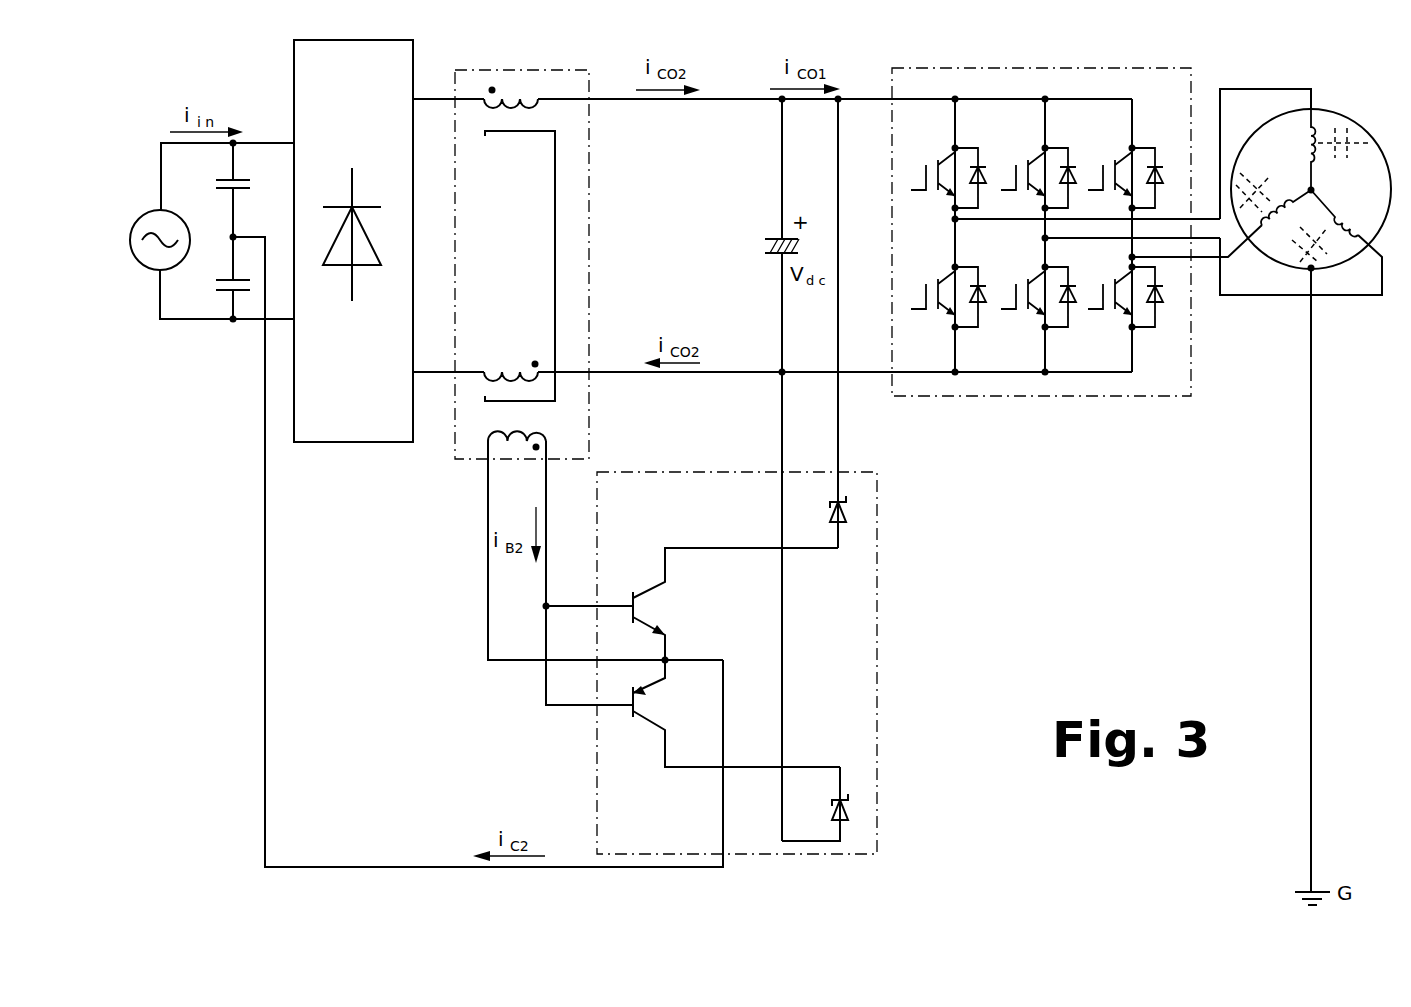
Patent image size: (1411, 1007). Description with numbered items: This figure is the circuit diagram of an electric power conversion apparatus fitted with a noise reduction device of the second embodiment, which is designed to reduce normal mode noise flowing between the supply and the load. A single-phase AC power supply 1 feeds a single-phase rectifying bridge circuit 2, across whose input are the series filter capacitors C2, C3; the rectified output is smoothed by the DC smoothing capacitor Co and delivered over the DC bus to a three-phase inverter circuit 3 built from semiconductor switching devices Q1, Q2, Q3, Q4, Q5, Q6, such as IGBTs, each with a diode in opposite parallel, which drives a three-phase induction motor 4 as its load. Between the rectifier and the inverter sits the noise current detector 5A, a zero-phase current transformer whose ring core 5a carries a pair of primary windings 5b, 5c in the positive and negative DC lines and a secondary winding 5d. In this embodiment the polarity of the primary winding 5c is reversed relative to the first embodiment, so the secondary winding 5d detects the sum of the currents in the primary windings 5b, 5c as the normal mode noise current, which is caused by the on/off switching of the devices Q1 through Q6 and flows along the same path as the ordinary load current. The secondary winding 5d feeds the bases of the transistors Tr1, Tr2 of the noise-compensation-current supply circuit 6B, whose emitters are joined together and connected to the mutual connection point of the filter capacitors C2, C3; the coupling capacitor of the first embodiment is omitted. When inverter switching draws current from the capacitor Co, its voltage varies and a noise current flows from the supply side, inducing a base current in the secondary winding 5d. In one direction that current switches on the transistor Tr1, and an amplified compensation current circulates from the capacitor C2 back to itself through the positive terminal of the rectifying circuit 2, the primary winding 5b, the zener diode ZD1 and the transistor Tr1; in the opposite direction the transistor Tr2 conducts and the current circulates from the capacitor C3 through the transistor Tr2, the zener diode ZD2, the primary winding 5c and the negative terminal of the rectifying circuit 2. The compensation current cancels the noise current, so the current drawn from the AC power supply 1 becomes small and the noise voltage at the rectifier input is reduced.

The single-phase AC power supply 1 is at (148, 266).
The single-phase rectifying bridge circuit 2 is at (416, 57).
The three-phase inverter circuit 3 is at (1193, 72).
The three-phase induction motor 4 is at (1343, 120).
The noise current detector 5A is at (500, 70).
The ring core 5a is at (555, 205).
The primary winding 5b is at (538, 107).
The primary winding 5c is at (535, 360).
The secondary winding 5d is at (546, 432).
The noise-compensation-current supply circuit 6B is at (878, 642).
The filter capacitor C2 is at (218, 190).
The filter capacitor C3 is at (218, 278).
The DC smoothing capacitor Co is at (760, 470).
The semiconductor switching device Q1 is at (947, 170).
The semiconductor switching device Q2 is at (947, 289).
The semiconductor switching device Q3 is at (1037, 170).
The semiconductor switching device Q4 is at (1037, 289).
The semiconductor switching device Q5 is at (1125, 170).
The semiconductor switching device Q6 is at (1125, 289).
The transistor Tr1 is at (735, 604).
The transistor Tr2 is at (736, 713).
The zener diode ZD1 is at (848, 506).
The zener diode ZD2 is at (850, 808).